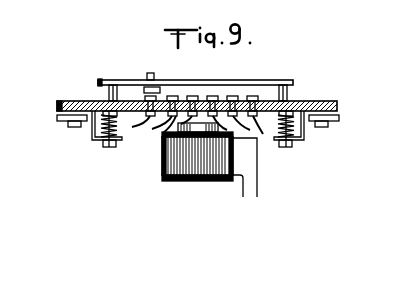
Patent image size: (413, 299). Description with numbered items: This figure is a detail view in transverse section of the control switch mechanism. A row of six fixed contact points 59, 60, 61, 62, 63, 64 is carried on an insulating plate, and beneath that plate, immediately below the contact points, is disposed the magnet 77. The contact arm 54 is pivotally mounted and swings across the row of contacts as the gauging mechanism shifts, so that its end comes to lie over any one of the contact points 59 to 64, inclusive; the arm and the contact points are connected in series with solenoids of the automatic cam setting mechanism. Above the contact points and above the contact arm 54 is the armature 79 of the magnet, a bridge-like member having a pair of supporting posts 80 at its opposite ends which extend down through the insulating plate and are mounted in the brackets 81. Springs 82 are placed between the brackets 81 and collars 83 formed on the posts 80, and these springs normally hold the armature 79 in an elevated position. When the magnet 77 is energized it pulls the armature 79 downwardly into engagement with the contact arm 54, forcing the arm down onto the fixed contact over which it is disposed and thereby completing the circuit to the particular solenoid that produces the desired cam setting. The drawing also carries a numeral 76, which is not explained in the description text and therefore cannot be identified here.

The contact arm 54 is at (158, 96).
The fixed contact point 59 is at (144, 91).
The fixed contact point 60 is at (174, 96).
The fixed contact point 61 is at (193, 96).
The fixed contact point 62 is at (213, 96).
The fixed contact point 63 is at (233, 96).
The fixed contact point 64 is at (252, 96).
The insulating plate 76 is at (322, 103).
The magnet 77 is at (163, 146).
The armature 79 is at (130, 80).
The supporting posts 80 is at (109, 92).
The brackets 81 is at (98, 142).
The springs 82 is at (107, 147).
The collars 83 is at (93, 128).